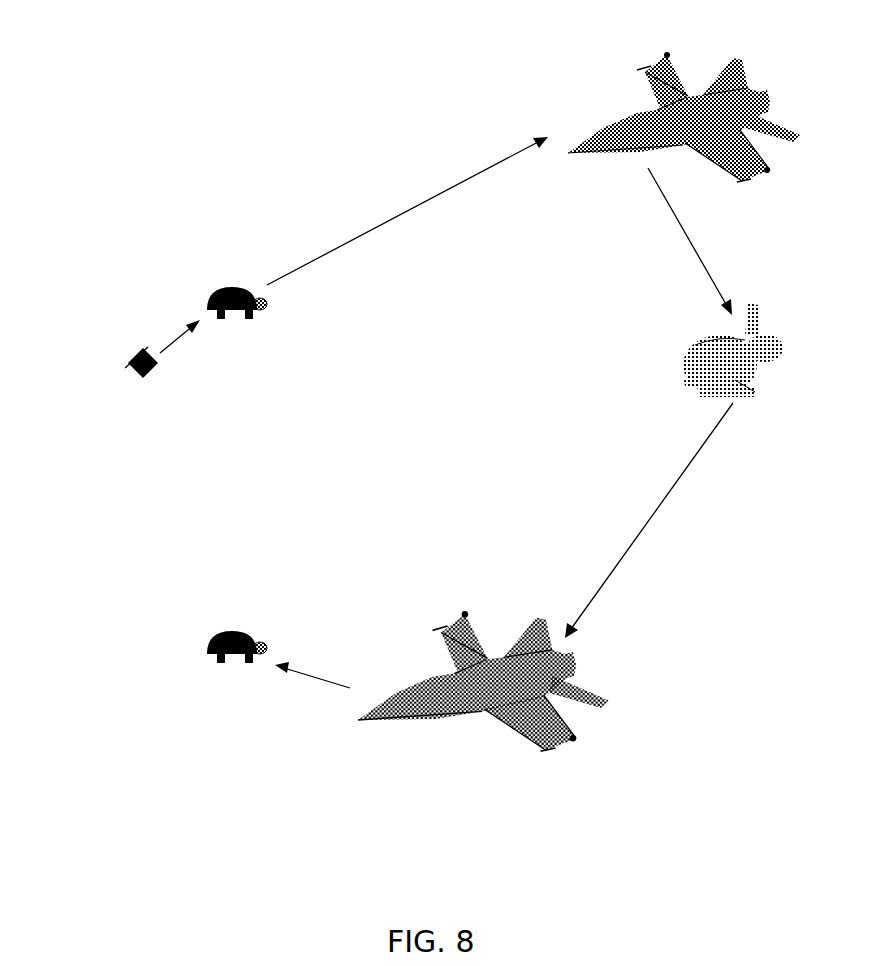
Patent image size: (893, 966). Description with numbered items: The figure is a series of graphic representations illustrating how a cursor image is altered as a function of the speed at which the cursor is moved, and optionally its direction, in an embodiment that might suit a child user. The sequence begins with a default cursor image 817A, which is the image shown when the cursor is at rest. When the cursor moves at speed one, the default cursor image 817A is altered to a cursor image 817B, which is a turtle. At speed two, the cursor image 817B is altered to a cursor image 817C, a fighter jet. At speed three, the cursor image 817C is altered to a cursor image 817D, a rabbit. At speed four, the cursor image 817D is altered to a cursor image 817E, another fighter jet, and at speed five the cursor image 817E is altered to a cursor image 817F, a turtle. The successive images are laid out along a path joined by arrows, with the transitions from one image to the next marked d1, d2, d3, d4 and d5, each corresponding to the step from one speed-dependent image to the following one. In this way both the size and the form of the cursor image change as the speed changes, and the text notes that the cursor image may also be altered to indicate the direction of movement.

The default cursor image 817A is at (117, 370).
The cursor image 817B is at (218, 285).
The cursor image 817C is at (635, 102).
The cursor image 817D is at (835, 320).
The cursor image 817E is at (475, 605).
The cursor image 817F is at (190, 640).
The distance between 817A and 817B d1 is at (185, 343).
The distance between 817B and 817C d2 is at (407, 211).
The distance between 817C and 817D d3 is at (690, 241).
The distance between 817D and 817E d4 is at (649, 520).
The distance between 817E and 817F d5 is at (312, 684).